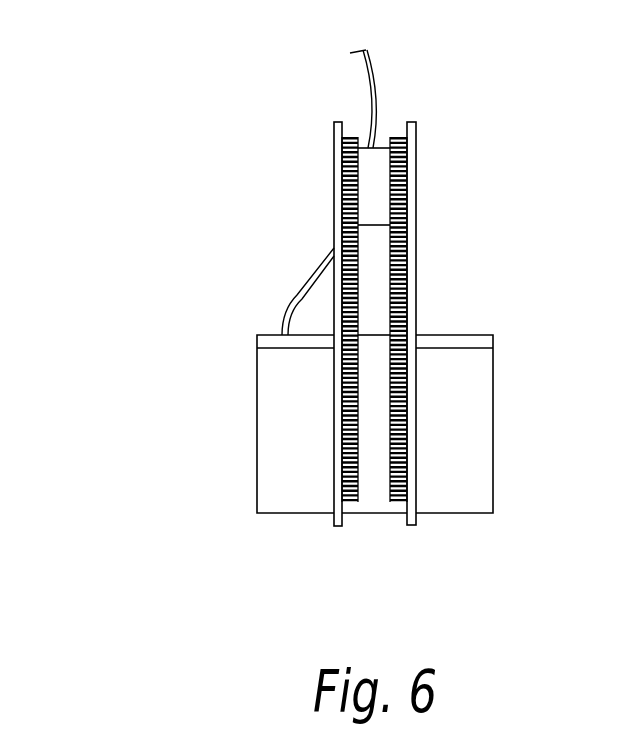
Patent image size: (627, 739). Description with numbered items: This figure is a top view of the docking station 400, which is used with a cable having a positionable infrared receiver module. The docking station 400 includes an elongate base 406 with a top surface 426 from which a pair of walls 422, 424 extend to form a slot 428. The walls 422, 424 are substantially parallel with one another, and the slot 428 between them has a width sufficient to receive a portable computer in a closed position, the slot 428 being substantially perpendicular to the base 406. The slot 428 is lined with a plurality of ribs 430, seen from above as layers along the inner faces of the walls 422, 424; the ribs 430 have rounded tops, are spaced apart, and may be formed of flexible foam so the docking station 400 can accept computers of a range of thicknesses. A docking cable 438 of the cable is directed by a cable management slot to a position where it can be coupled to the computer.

The docking station 400 is at (533, 251).
The elongate base 406 is at (467, 460).
The wall 422 is at (416, 410).
The wall 424 is at (333, 427).
The top surface 426 is at (447, 495).
The slot 428 is at (373, 532).
The ribs 430 is at (400, 247).
The docking cable 438 is at (375, 98).